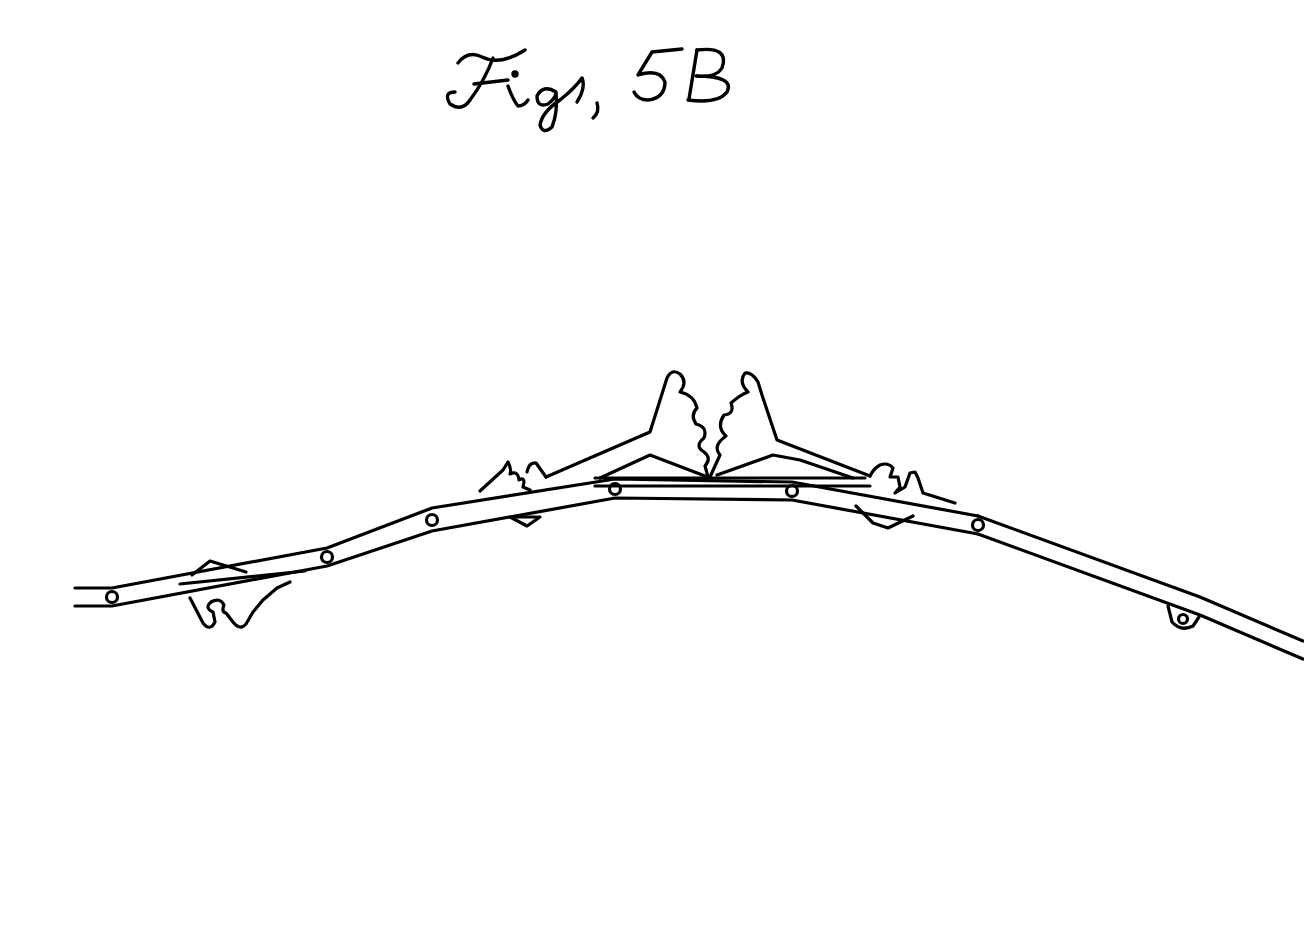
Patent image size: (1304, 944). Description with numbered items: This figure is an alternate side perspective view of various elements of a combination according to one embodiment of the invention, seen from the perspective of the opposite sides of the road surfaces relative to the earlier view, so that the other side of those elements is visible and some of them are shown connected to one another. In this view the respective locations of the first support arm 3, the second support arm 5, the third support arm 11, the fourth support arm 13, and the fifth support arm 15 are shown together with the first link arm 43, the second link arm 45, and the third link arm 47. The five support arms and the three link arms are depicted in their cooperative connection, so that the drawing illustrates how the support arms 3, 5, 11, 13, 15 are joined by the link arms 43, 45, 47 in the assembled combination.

The first support arm 3 is at (798, 460).
The second support arm 5 is at (588, 460).
The third support arm 11 is at (855, 476).
The fourth support arm 13 is at (1148, 600).
The fifth support arm 15 is at (367, 537).
The first link arm 43 is at (858, 505).
The second link arm 45 is at (673, 487).
The third link arm 47 is at (478, 513).